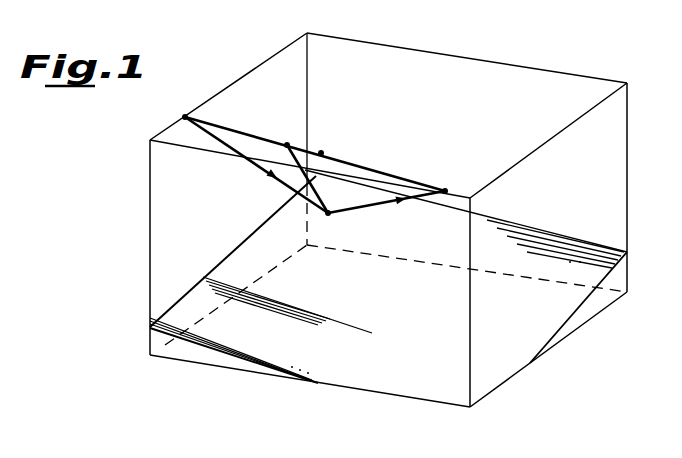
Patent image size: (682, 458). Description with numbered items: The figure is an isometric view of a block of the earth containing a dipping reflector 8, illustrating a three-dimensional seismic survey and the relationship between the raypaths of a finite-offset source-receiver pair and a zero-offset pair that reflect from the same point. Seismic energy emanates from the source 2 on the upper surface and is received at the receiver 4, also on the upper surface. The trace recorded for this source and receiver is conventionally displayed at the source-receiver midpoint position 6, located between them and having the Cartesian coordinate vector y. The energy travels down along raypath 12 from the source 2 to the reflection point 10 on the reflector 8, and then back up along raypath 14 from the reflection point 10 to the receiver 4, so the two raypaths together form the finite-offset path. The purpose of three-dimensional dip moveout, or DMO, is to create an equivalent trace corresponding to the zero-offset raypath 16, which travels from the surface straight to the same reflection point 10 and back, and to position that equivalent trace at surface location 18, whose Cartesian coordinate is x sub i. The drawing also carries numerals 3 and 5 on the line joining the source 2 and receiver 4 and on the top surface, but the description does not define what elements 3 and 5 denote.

The source 2 is at (185, 117).
The reference line on top surface 3 is at (252, 138).
The receiver 4 is at (447, 189).
The top surface 5 is at (193, 151).
The source-receiver midpoint position 6 is at (323, 153).
The reflector 8 is at (390, 356).
The reflection point 10 is at (330, 217).
The raypath 12 is at (247, 158).
The raypath 14 is at (425, 198).
The zero-offset raypath 16 is at (322, 192).
The surface location 18 is at (289, 144).